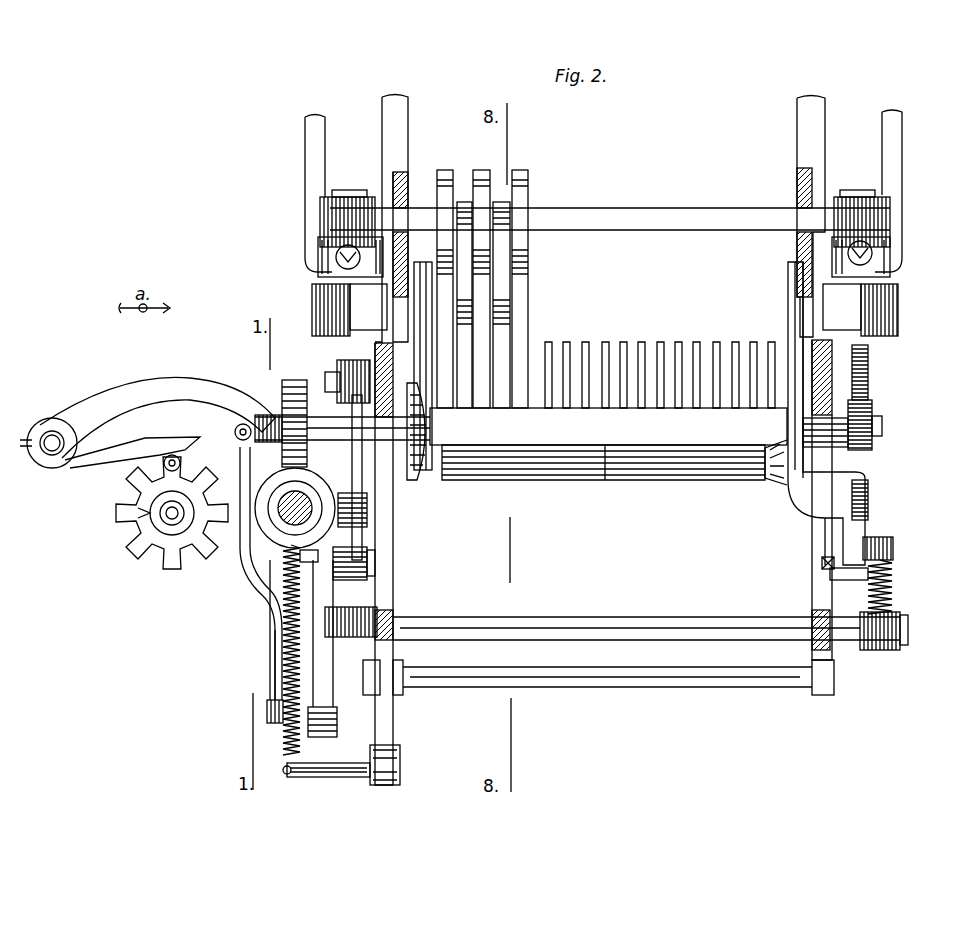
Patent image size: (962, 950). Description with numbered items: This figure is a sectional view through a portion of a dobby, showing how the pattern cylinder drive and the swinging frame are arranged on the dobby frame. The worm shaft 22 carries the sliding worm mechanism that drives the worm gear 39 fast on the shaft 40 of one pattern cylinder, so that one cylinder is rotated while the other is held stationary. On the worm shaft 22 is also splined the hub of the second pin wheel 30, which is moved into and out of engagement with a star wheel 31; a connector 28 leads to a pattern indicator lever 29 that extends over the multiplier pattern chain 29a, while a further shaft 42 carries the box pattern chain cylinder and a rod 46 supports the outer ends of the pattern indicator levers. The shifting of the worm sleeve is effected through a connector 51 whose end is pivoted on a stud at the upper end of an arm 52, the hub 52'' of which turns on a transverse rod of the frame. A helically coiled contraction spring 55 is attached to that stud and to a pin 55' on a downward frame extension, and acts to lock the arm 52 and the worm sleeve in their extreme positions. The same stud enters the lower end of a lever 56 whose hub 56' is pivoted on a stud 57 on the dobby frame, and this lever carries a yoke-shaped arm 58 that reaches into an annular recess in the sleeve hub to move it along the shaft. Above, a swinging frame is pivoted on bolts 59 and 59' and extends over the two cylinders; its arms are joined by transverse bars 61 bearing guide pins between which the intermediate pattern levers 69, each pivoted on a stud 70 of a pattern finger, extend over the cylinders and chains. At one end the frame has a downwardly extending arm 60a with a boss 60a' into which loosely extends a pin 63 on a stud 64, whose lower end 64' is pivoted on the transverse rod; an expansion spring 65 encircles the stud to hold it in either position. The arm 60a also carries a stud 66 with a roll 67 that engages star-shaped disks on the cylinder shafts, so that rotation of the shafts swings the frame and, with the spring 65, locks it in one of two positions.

The worm shaft 22 is at (248, 572).
The connector 28 is at (277, 650).
The pattern indicator lever 29 is at (168, 415).
The multiplier pattern chain 29a is at (160, 455).
The second pin wheel 30 is at (287, 540).
The star wheel 31 is at (145, 580).
The worm gear 39 is at (290, 402).
The shaft 40 is at (262, 418).
The shaft 42 is at (168, 515).
The rod 46 is at (42, 437).
The connector 51 is at (362, 555).
The arm 52 is at (336, 648).
The hub 52'' is at (382, 603).
The contraction spring 55 is at (262, 650).
The pin 55' is at (326, 784).
The lever 56 is at (388, 477).
The hub 56' is at (340, 374).
The stud 57 is at (325, 381).
The yoke-shaped arm 58 is at (345, 513).
The bolt 59 is at (350, 278).
The bolt 59' is at (855, 276).
The downwardly extending arm 60a is at (787, 413).
The boss 60a' is at (819, 591).
The transverse bar 61 is at (612, 432).
The pin 63 is at (820, 566).
The stud 64 is at (901, 587).
The lower end 64' is at (899, 620).
The expansion spring 65 is at (893, 572).
The stud 66 is at (882, 427).
The roll 67 is at (866, 418).
The intermediate pattern lever 69 is at (523, 315).
The stud 70 is at (520, 268).